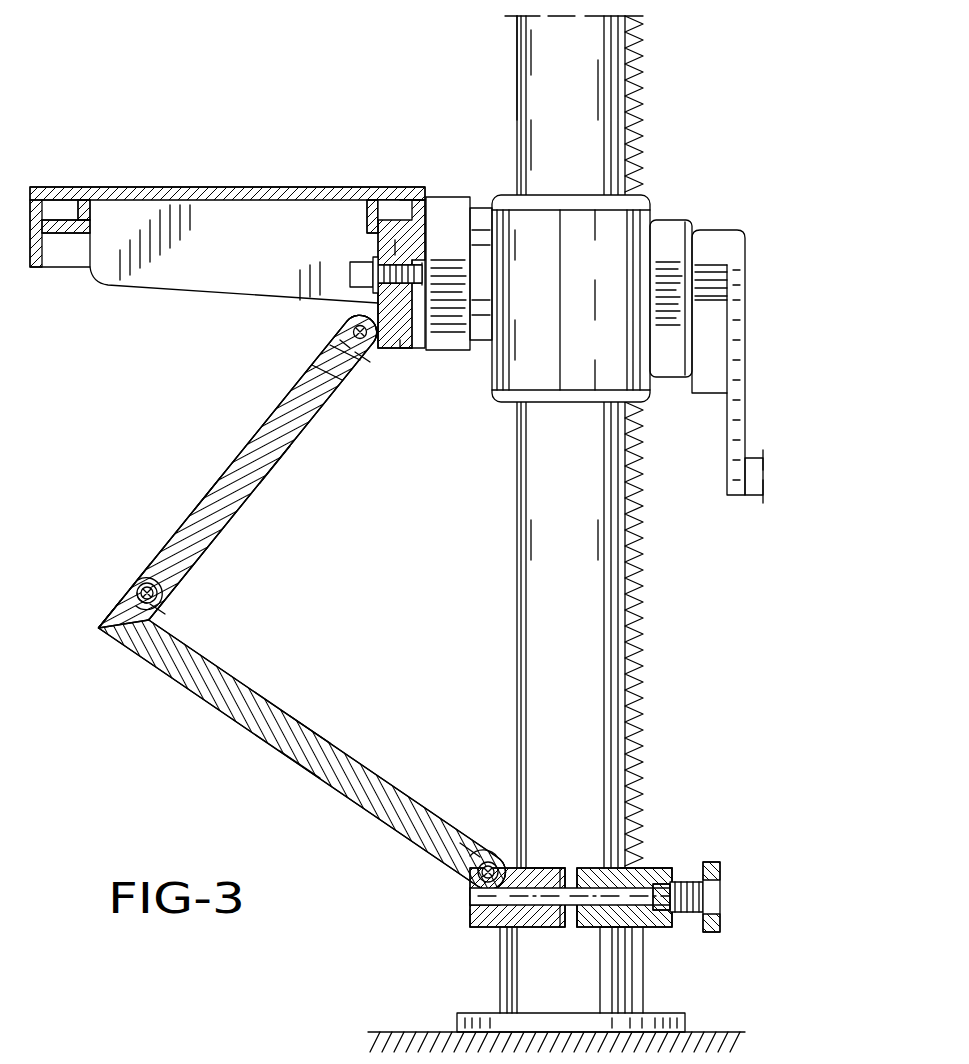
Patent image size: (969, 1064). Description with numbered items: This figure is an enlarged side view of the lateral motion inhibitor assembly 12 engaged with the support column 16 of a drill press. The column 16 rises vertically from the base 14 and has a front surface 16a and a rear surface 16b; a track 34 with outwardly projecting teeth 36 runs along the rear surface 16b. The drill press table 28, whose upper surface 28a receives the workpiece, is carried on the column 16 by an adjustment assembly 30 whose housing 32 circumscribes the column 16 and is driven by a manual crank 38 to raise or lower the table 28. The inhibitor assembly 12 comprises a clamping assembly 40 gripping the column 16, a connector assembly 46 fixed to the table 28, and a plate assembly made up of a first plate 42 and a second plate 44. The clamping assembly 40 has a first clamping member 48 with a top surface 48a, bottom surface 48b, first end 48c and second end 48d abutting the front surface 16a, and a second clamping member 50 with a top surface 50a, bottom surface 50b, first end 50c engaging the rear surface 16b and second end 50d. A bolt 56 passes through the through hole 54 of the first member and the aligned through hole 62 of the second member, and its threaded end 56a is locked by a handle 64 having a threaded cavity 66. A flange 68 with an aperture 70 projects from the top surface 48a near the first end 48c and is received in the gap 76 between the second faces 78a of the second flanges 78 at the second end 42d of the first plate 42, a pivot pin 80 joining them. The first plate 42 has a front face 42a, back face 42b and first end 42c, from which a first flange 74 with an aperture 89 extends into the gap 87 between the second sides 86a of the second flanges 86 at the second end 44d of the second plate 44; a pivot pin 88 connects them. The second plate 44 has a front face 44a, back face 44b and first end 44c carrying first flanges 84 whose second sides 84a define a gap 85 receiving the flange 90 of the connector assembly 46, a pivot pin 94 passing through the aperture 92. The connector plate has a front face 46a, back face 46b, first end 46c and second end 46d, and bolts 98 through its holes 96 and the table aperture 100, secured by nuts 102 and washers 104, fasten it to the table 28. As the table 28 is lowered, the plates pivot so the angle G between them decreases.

The lateral motion inhibitor assembly 12 is at (158, 386).
The base 14 is at (415, 1028).
The support column 16 is at (577, 514).
The front surface of column 16a is at (517, 58).
The rear surface of column 16b is at (643, 690).
The drill press table 28 is at (227, 213).
The upper surface of table 28a is at (240, 188).
The adjustment assembly 30 is at (612, 275).
The housing 32 is at (570, 222).
The track 34 is at (678, 441).
The teeth 36 is at (643, 118).
The crank 38 is at (733, 427).
The clamping assembly 40 is at (574, 876).
The first plate 42 is at (280, 745).
The front face of first plate 42a is at (300, 774).
The back face of first plate 42b is at (306, 716).
The first end of first plate 42c is at (100, 628).
The second end of first plate 42d is at (470, 863).
The second plate 44 is at (252, 471).
The front face of second plate 44a is at (216, 470).
The back face of second plate 44b is at (273, 472).
The first end of second plate 44c is at (341, 378).
The second end of second plate 44d is at (180, 540).
The connector assembly 46 is at (358, 312).
The front face of connector plate 46a is at (378, 303).
The back face of connector plate 46b is at (417, 352).
The first end of connector plate 46c is at (406, 195).
The second end of connector plate 46d is at (396, 358).
The first clamping member 48 is at (469, 875).
The top surface of first clamping member 48a is at (548, 876).
The bottom surface of first clamping member 48b is at (486, 930).
The first end of first clamping member 48c is at (470, 920).
The second end of first clamping member 48d is at (565, 874).
The second clamping member 50 is at (659, 873).
The top surface of second clamping member 50a is at (656, 864).
The bottom surface of second clamping member 50b is at (610, 927).
The first end of second clamping member 50c is at (578, 920).
The second end of second clamping member 50d is at (670, 878).
The through hole 54 is at (546, 906).
The bolt 56 is at (588, 897).
The threaded end of bolt 56a is at (704, 895).
The through hole 62 is at (604, 890).
The handle 64 is at (721, 872).
The threaded cavity 66 is at (688, 906).
The flange 68 is at (486, 862).
The aperture 70 is at (470, 905).
The first flange 74 is at (162, 610).
The gap 76 is at (482, 872).
The second flange 78 is at (403, 867).
The second face of second flange 78a is at (470, 868).
The pivot pin 80 is at (478, 856).
The first flange 84 is at (275, 370).
The second side of first flange 84a is at (333, 372).
The gap 85 is at (364, 358).
The second flange 86 is at (90, 576).
The second side of second flange 86a is at (148, 576).
The gap 87 is at (158, 594).
The pivot pin 88 is at (142, 589).
The aperture 89 is at (142, 598).
The flange 90 is at (354, 333).
The aperture 92 is at (400, 350).
The pivot pin 94 is at (347, 348).
The hole 96 is at (435, 300).
The bolt 98 is at (394, 246).
The aperture 100 is at (472, 262).
The nut 102 is at (358, 278).
The washer 104 is at (373, 270).
The angle between first and second plates G is at (245, 525).